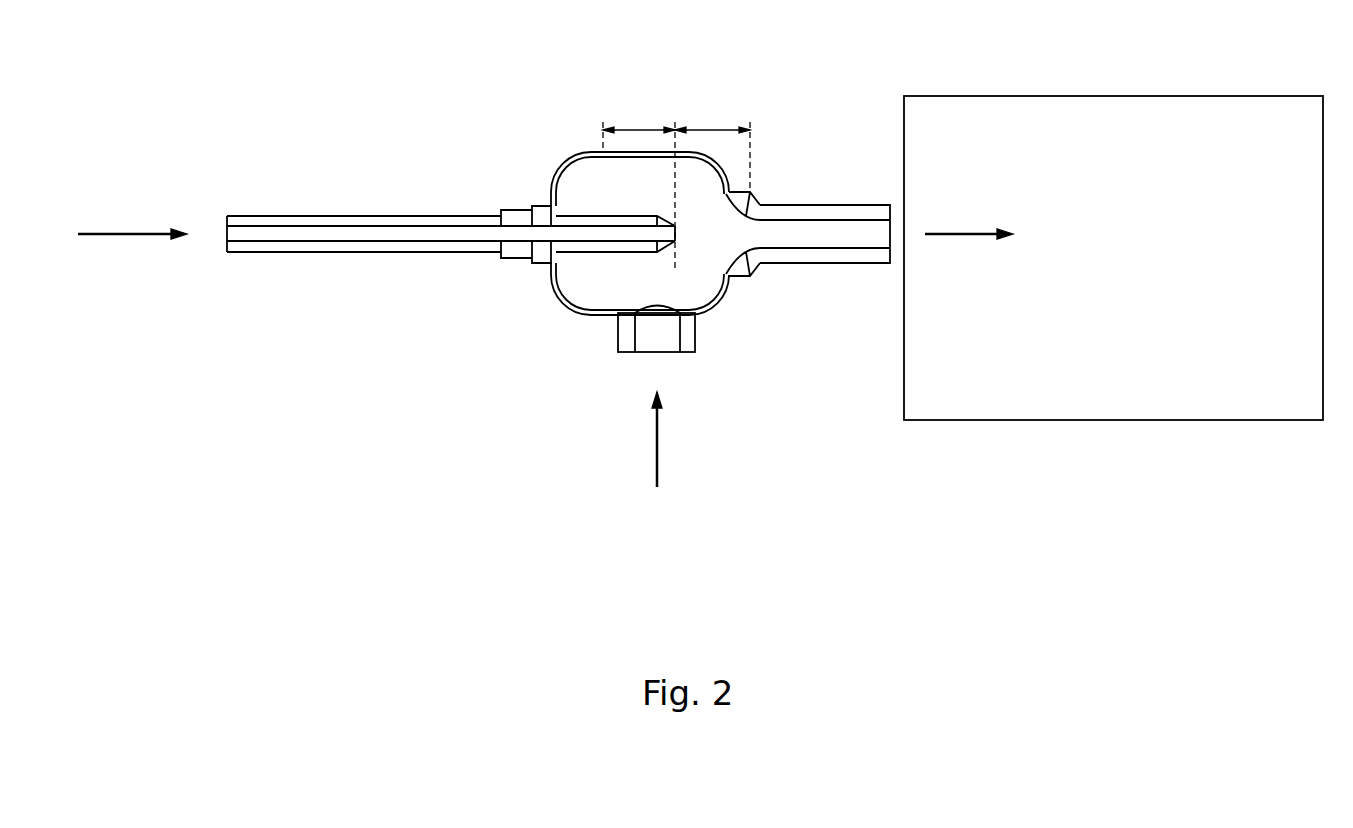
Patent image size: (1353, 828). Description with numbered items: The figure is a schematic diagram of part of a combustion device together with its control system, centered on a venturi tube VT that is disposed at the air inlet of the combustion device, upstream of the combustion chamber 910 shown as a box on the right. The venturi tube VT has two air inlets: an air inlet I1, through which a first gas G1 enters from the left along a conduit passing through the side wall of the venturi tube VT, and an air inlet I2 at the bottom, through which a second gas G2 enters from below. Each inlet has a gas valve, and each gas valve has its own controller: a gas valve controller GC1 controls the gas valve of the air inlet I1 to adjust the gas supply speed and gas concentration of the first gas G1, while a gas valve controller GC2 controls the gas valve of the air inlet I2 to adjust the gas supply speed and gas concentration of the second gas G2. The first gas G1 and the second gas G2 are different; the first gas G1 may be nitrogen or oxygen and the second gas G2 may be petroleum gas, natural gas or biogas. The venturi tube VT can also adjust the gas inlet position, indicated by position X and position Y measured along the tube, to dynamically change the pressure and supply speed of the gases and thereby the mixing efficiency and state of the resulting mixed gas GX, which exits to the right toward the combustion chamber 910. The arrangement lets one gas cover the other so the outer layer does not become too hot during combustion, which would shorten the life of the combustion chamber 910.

The combustion chamber 910 is at (1093, 93).
The venturi tube VT is at (578, 158).
The air inlet I1 is at (517, 210).
The air inlet I2 is at (695, 316).
The gas valve controller GC1 is at (302, 255).
The gas valve controller GC2 is at (618, 337).
The first gas G1 is at (145, 232).
The second gas G2 is at (660, 432).
The mixed gas GX is at (968, 230).
The position X is at (639, 186).
The position Y is at (712, 147).